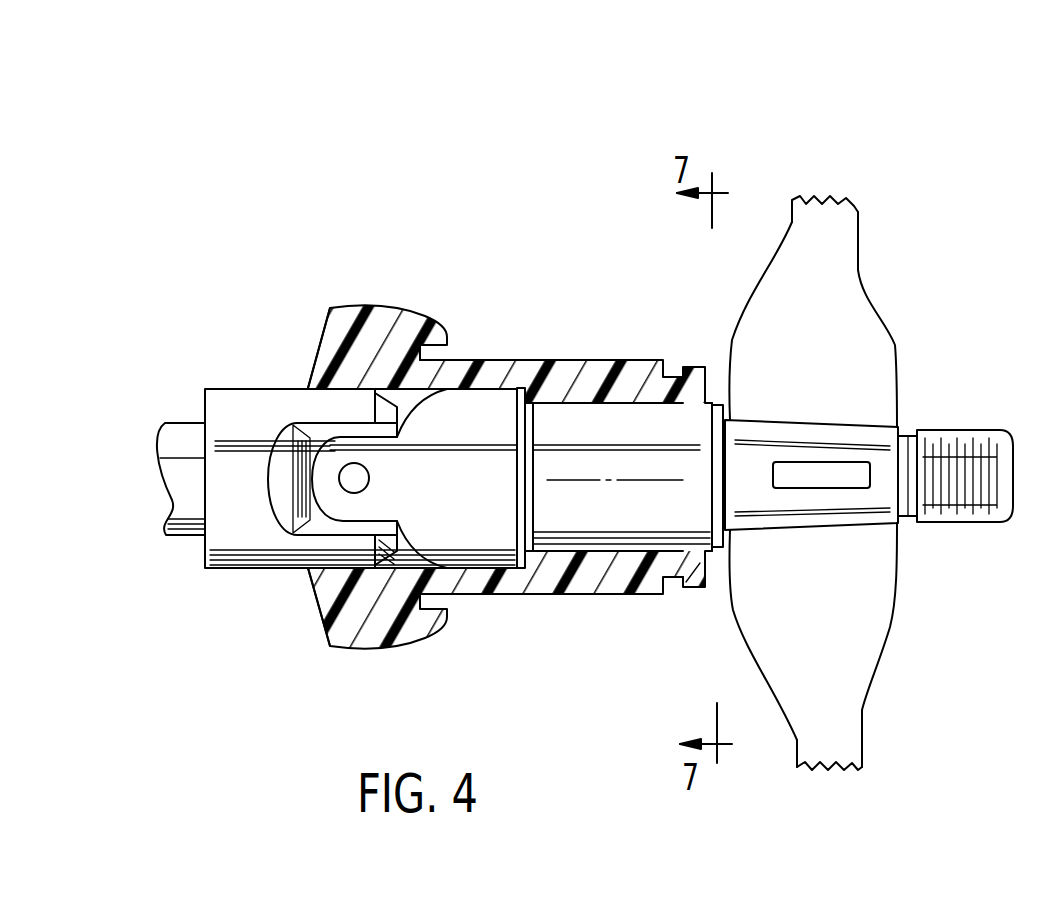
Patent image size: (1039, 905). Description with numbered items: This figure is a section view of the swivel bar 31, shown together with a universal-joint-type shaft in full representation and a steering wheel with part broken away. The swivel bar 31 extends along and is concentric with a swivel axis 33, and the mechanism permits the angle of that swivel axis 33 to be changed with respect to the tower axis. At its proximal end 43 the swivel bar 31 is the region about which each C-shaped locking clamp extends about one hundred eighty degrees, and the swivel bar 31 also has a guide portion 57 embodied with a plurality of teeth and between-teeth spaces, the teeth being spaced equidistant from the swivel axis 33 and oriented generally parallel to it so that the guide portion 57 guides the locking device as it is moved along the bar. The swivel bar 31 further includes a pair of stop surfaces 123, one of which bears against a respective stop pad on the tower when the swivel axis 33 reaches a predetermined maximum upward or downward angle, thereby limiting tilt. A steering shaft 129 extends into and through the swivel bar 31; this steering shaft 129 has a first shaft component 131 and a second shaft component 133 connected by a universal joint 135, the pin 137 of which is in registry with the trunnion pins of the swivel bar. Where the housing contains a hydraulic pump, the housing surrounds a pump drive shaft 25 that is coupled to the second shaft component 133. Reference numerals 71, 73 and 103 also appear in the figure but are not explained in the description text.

The steering shaft 25 is at (185, 545).
The swivel bar 31 is at (535, 360).
The swivel axis 33 is at (663, 480).
The proximal end 43 is at (380, 308).
The guide portion 57 is at (640, 320).
The collar assembly 71 is at (683, 605).
The collar 73 is at (687, 580).
The frame member 103 is at (858, 268).
The stop surfaces 123 is at (327, 325).
The steering shaft 129 is at (872, 435).
The first shaft component 131 is at (630, 430).
The second shaft component 133 is at (267, 570).
The universal joint 135 is at (352, 528).
The pin 137 is at (352, 474).